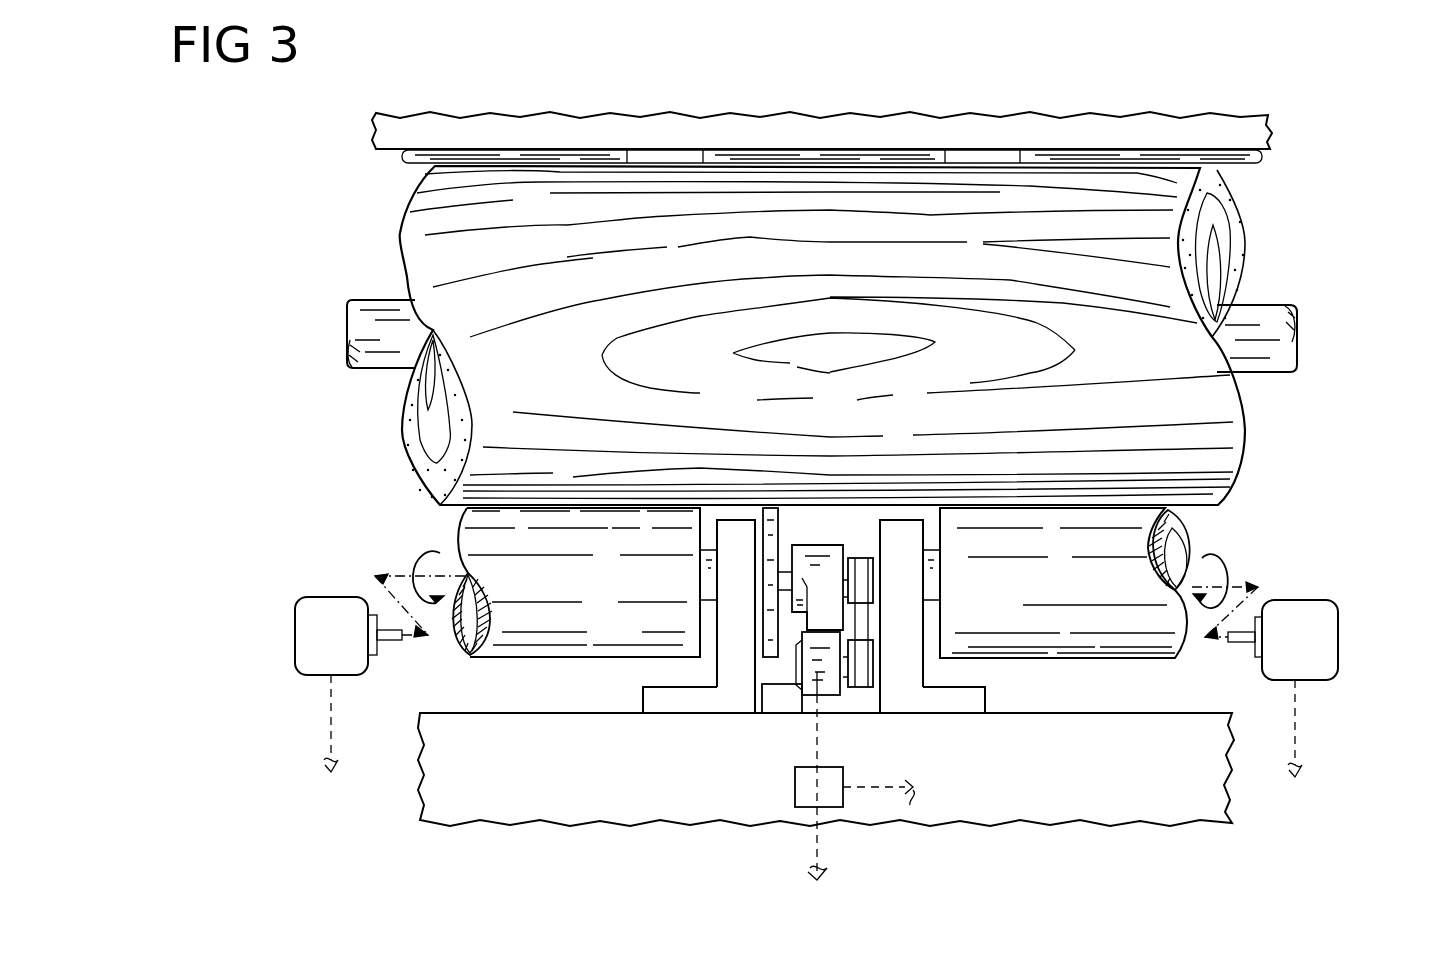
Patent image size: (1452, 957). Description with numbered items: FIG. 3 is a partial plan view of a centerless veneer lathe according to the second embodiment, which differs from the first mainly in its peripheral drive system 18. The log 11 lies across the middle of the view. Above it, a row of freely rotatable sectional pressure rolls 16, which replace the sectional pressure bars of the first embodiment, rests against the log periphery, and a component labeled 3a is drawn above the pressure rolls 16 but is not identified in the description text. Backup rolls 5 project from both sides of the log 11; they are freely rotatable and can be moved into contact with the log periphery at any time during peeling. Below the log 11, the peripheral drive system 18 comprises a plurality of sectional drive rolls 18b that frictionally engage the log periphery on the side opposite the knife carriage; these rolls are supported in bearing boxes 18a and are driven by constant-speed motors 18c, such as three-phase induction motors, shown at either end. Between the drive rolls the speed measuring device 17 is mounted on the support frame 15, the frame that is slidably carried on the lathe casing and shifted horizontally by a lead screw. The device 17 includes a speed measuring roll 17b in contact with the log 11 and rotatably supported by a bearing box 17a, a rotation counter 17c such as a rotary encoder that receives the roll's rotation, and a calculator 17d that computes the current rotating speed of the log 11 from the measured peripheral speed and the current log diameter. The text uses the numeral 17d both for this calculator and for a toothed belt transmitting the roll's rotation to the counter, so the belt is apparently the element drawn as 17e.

The upper pressing plate 3a is at (398, 130).
The sectional pressure rolls 16 is at (398, 170).
The backup rolls 5 is at (347, 318).
The log 11 is at (410, 433).
The peripheral drive system 18 is at (363, 547).
The bearing boxes 18a is at (655, 700).
The sectional drive rolls 18b is at (480, 543).
The constant-speed motors 18c is at (313, 647).
The speed measuring device 17 is at (777, 840).
The bearing box 17a is at (775, 700).
The speed measuring roll 17b is at (780, 523).
The rotation counter 17c is at (813, 688).
The calculator 17d is at (820, 793).
The gear 17e is at (863, 688).
The support frame 15 is at (478, 775).